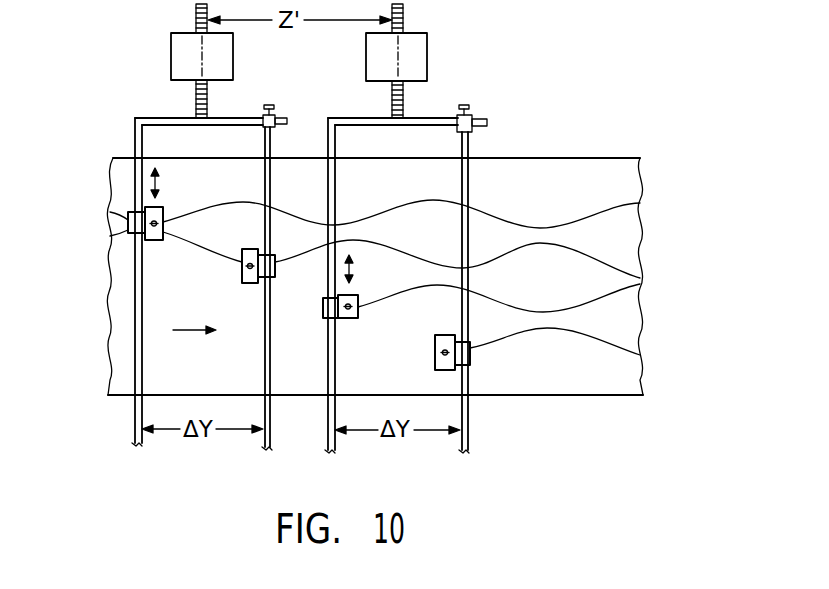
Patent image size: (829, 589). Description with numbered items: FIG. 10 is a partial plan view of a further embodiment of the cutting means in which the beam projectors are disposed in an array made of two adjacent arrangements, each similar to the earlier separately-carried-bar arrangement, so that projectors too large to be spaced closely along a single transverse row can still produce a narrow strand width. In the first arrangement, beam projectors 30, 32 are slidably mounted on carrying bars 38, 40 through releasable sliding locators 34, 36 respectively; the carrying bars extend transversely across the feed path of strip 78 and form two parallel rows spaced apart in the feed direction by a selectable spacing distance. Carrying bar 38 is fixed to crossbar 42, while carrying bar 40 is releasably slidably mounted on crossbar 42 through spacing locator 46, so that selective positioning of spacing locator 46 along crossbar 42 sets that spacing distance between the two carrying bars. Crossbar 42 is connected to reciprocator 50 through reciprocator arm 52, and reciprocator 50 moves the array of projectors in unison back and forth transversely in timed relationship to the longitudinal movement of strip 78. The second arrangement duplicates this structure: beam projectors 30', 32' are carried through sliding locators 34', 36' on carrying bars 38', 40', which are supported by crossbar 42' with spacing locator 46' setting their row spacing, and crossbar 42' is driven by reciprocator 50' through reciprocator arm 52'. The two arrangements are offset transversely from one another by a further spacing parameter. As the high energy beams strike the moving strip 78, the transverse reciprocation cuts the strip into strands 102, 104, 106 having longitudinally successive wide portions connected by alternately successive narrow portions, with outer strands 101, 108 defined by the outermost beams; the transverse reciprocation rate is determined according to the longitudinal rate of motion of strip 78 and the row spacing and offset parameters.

The beam projector 30 is at (109, 209).
The beam projector 32 is at (223, 260).
The releaseable sliding locator 34 is at (100, 212).
The releaseable sliding locator 36 is at (230, 275).
The carrying bar 38 is at (100, 282).
The carrying bar 40 is at (242, 288).
The crossbar 42 is at (164, 110).
The spacing locator 46 is at (245, 129).
The reciprocator 50 is at (159, 56).
The reciprocator arm 52 is at (146, 61).
The strip 78 is at (112, 324).
The beam projector 30' is at (320, 310).
The beam projector 32' is at (420, 341).
The releaseable sliding locator 34' is at (310, 298).
The releaseable sliding locator 36' is at (500, 362).
The carrying bar 38' is at (306, 285).
The carrying bar 40' is at (511, 291).
The crossbar 42' is at (378, 102).
The spacing locator 46' is at (504, 114).
The reciprocator 50' is at (440, 56).
The reciprocator arm 52' is at (455, 61).
The outer strand 101 is at (630, 184).
The strand 102 is at (628, 233).
The strand 104 is at (627, 278).
The strand 106 is at (627, 327).
The outer strand 108 is at (625, 378).